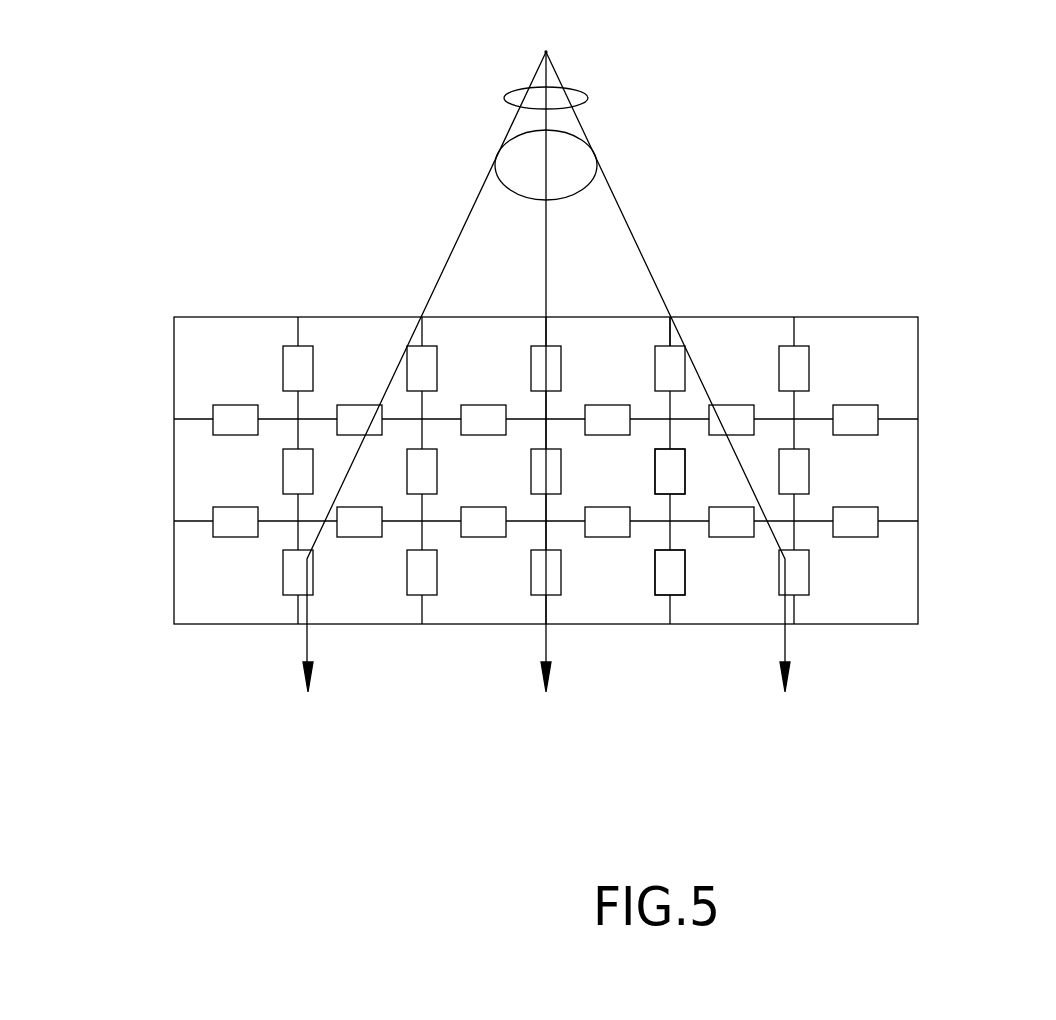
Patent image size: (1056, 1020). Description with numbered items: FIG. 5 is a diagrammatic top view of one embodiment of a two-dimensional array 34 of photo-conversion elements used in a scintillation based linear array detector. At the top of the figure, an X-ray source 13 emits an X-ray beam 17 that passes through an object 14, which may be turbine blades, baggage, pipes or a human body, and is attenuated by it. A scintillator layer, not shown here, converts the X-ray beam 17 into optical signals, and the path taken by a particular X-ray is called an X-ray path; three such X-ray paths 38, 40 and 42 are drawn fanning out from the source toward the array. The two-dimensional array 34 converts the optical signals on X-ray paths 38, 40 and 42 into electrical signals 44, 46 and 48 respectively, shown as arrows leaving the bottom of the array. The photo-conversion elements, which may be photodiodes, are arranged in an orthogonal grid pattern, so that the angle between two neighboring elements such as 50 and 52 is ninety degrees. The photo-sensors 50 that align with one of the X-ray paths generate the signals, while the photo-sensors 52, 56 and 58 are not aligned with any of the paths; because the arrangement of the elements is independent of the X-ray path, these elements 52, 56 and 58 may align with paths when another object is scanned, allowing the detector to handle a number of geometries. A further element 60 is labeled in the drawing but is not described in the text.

The X-ray source 13 is at (591, 36).
The object 14 is at (578, 140).
The X-ray beam 17 is at (518, 79).
The two-dimensional array 34 is at (611, 456).
The X-ray path 38 is at (416, 357).
The X-ray path 40 is at (517, 357).
The X-ray path 42 is at (665, 357).
The electrical signal 44 is at (265, 690).
The electrical signal 46 is at (517, 690).
The electrical signal 48 is at (754, 686).
The photo-sensor 50 is at (581, 474).
The photo-sensor 52 is at (531, 446).
The photo-sensor 56 is at (696, 303).
The photo-sensor 58 is at (683, 445).
The detector element 60 is at (653, 636).